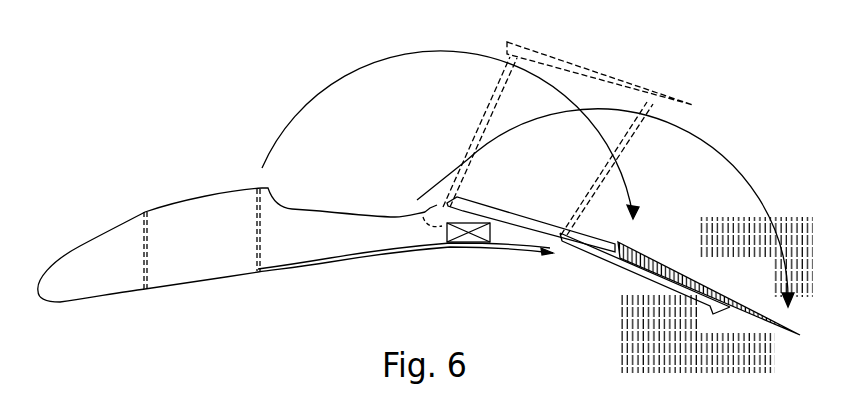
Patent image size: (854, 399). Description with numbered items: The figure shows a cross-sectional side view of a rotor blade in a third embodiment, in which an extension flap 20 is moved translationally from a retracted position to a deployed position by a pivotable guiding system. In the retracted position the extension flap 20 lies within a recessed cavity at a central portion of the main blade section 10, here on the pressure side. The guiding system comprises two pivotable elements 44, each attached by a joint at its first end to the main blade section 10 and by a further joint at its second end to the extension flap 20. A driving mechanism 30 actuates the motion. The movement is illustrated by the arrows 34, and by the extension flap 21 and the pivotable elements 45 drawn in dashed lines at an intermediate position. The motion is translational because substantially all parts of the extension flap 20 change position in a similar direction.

The main blade section 10 is at (88, 228).
The extension flap 20 is at (675, 265).
The extension flap in intermediate position 21 is at (640, 76).
The driving mechanism 30 is at (470, 243).
The arrows 34 is at (345, 79).
The pivotable elements 44 is at (641, 281).
The pivotable elements in intermediate position 45 is at (483, 120).